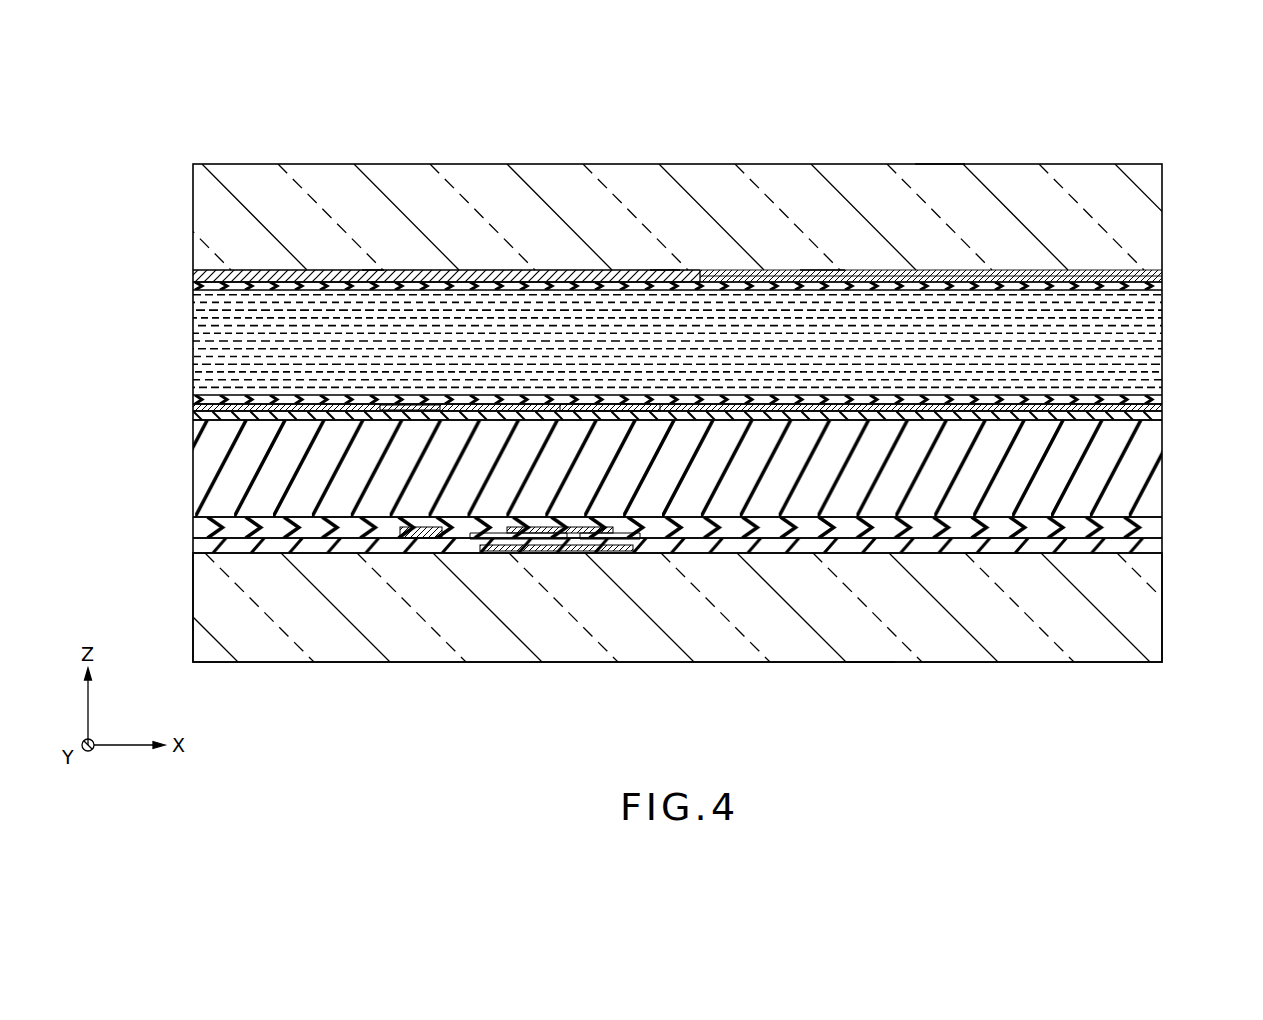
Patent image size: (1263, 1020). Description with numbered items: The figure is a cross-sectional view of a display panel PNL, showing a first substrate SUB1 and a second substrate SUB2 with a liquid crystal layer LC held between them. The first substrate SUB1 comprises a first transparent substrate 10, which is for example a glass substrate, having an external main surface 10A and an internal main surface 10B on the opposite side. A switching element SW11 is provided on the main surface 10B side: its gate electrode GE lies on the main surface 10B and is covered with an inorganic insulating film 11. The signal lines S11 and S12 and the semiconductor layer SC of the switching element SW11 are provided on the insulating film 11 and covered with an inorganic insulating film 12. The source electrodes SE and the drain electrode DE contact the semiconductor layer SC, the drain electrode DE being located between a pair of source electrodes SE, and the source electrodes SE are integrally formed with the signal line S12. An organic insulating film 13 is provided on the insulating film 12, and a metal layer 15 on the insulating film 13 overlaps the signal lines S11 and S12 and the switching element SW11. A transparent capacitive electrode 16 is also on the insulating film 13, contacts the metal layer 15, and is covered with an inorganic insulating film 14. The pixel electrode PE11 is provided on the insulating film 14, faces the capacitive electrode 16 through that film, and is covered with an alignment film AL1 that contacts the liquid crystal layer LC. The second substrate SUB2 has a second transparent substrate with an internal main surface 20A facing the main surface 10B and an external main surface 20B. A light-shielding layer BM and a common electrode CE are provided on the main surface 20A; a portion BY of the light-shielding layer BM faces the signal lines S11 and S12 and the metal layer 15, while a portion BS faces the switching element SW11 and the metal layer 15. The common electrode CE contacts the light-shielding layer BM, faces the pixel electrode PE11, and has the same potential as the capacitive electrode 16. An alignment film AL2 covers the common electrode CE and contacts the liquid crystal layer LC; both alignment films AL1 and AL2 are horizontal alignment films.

The display panel PNL is at (1110, 122).
The first substrate SUB1 is at (181, 582).
The second substrate SUB2 is at (181, 227).
The liquid crystal layer LC is at (195, 352).
The first transparent substrate 10 is at (1150, 608).
The main surface (external surface) 10A is at (869, 675).
The main surface (internal surface) 10B is at (978, 549).
The insulating film 11 is at (1150, 548).
The insulating film 12 is at (1150, 530).
The insulating film 13 is at (1150, 468).
The insulating film 14 is at (1140, 420).
The metal layer 15 is at (443, 396).
The capacitive electrode 16 is at (565, 405).
The pixel electrode PE11 is at (1160, 407).
The alignment film AL1 is at (1122, 398).
The alignment film AL2 is at (1130, 287).
The common electrode CE is at (1160, 275).
The light-shielding layer BM is at (333, 259).
The portion of the light-shielding layer BY is at (372, 263).
The portion of the light-shielding layer BS is at (665, 266).
The main surface (internal surface) 20A is at (822, 283).
The main surface (external surface) 20B is at (937, 156).
The signal line S11 is at (392, 542).
The signal line S12 is at (492, 629).
The switching element SW11 is at (570, 642).
The gate electrode GE is at (533, 553).
The semiconductor layer SC is at (584, 536).
The source electrode SE is at (543, 629).
The drain electrode DE is at (660, 540).